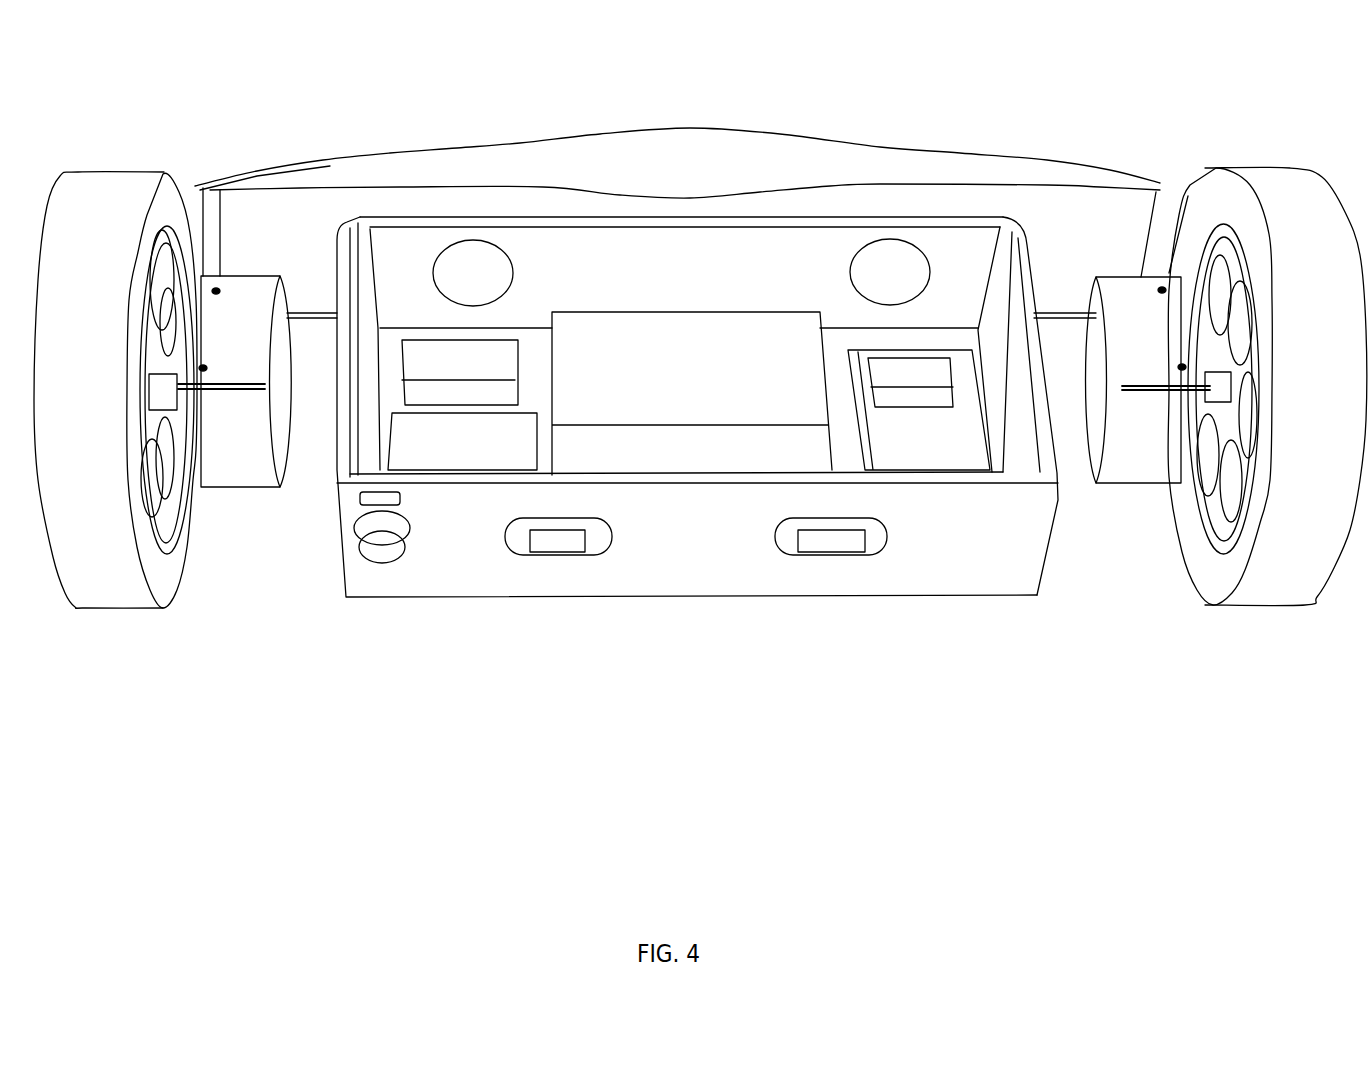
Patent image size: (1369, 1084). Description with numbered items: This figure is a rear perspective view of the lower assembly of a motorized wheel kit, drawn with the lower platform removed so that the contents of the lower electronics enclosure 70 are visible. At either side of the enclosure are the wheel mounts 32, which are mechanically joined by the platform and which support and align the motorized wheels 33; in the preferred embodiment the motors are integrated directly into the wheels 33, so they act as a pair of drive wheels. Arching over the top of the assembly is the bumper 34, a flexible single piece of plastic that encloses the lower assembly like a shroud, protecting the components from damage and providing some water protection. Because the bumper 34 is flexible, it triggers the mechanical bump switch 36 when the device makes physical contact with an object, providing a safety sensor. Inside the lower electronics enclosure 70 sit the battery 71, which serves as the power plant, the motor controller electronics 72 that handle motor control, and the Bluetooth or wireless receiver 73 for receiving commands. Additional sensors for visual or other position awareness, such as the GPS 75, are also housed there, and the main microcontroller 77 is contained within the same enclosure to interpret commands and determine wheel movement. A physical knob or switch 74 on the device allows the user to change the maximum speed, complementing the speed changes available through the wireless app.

The wheel mounts 32 is at (1152, 455).
The motorized wheels 33 is at (121, 183).
The bumper 34 is at (513, 158).
The mechanical bump switch 36 is at (903, 273).
The lower electronics enclosure 70 is at (1030, 575).
The battery 71 is at (698, 450).
The motor controller electronics 72 is at (912, 433).
The Bluetooth or wireless receiver 73 is at (403, 387).
The physical knob or switch 74 is at (380, 553).
The GPS 75 is at (492, 443).
The main microcontroller 77 is at (925, 372).